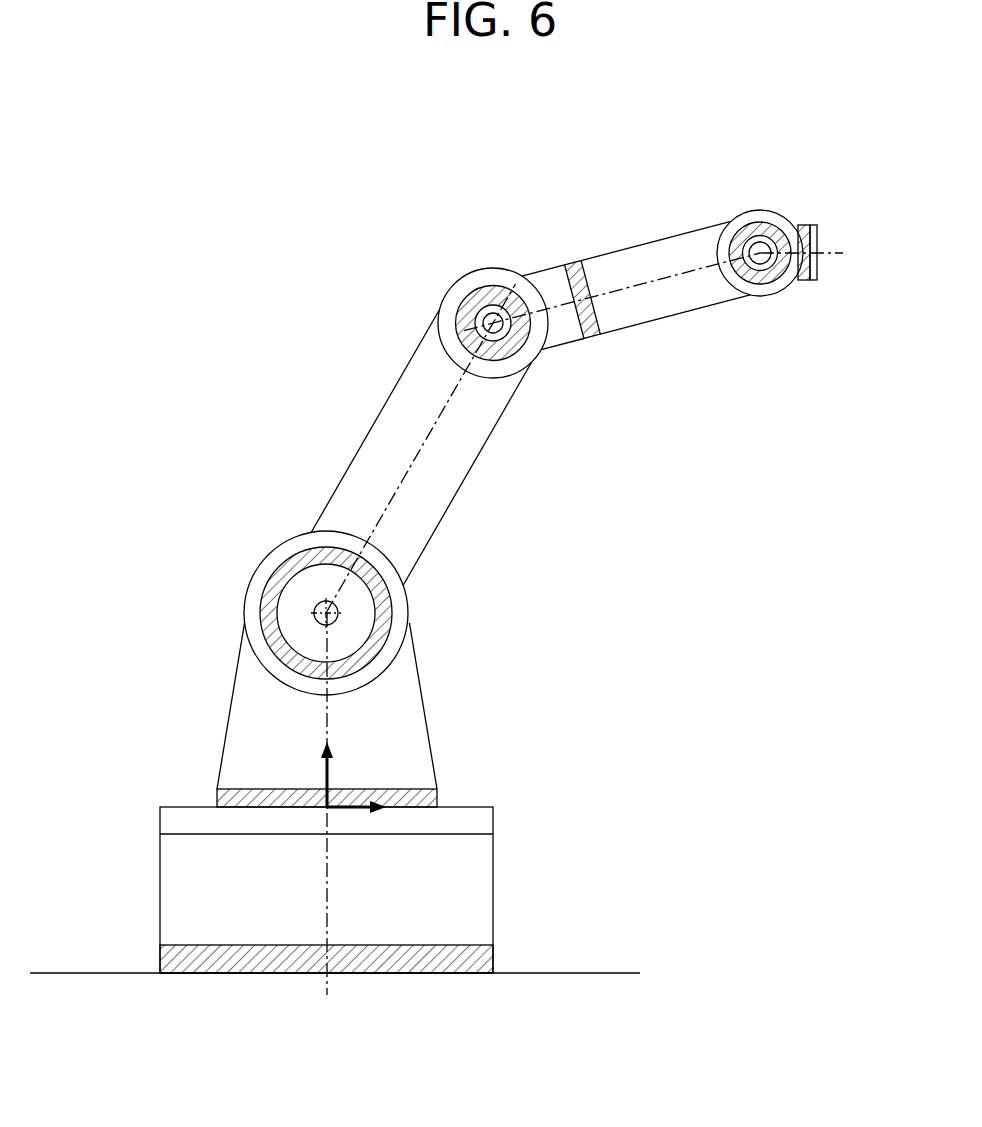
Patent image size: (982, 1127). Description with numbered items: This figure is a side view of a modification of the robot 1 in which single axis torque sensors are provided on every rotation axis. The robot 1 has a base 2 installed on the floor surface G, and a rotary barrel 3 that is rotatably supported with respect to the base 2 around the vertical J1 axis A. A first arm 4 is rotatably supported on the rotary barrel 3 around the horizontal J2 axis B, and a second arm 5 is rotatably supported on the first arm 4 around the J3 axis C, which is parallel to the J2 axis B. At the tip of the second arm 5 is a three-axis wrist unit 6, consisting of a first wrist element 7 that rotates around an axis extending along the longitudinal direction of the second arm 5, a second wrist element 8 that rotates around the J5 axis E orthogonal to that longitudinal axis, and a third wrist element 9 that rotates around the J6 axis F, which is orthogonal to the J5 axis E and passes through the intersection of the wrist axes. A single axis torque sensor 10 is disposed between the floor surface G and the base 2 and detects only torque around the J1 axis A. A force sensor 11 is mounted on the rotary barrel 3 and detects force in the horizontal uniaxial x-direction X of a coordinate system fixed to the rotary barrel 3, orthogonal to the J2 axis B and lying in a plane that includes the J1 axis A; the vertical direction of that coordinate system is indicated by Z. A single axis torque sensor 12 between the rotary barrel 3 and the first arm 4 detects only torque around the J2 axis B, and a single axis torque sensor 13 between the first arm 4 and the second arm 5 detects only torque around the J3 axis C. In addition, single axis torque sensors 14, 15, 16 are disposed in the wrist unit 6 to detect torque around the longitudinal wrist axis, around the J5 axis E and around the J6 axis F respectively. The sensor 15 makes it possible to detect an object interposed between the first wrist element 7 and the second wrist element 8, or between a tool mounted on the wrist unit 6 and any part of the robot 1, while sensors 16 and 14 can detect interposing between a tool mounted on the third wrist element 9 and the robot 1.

The robot 1 is at (318, 274).
The base 2 is at (494, 878).
The rotary barrel 3 is at (424, 703).
The first arm 4 is at (381, 410).
The second arm 5 is at (543, 270).
The wrist unit 6 is at (714, 209).
The first wrist element 7 is at (636, 246).
The second wrist element 8 is at (798, 281).
The third wrist element 9 is at (818, 236).
The single axis torque sensor 10 is at (494, 955).
The force sensor 11 is at (438, 795).
The single axis torque sensor 12 is at (393, 603).
The single axis torque sensor 13 is at (512, 357).
The single axis torque sensor 14 is at (599, 318).
The single axis torque sensor 15 is at (759, 286).
The single axis torque sensor 16 is at (806, 225).
The J1 axis A is at (328, 888).
The J2 axis B is at (322, 609).
The J3 axis C is at (487, 321).
The J5 axis E is at (757, 245).
The J6 axis F is at (833, 257).
The floor surface G is at (110, 973).
The x-direction X is at (359, 819).
The Z axis Z is at (318, 771).